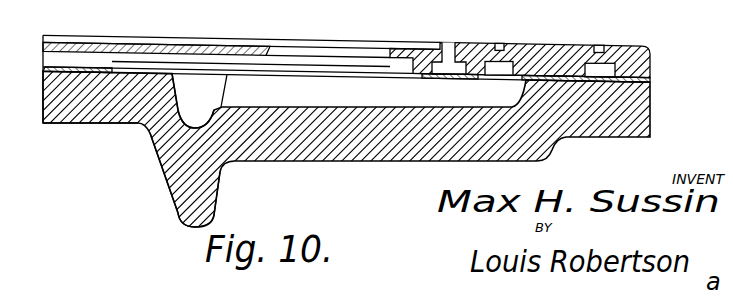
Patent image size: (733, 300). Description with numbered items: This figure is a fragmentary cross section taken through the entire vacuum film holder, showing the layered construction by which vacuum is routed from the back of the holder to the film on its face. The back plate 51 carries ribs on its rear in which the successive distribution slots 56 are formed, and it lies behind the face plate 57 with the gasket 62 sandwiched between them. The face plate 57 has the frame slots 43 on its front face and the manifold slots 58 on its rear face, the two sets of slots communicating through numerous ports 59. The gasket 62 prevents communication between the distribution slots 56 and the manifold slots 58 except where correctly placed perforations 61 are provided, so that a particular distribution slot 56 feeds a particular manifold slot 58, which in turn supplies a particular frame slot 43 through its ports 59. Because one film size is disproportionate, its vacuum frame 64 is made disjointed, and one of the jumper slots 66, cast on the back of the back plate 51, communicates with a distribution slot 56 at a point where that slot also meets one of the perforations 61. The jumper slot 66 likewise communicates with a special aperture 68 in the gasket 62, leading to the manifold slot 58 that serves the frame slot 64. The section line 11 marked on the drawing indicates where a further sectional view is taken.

The section line 11 is at (38, 63).
The frame slots 43 is at (603, 48).
The back plate 51 is at (650, 118).
The distribution slots 56 is at (188, 112).
The face plate 57 is at (552, 48).
The manifold slots 58 is at (140, 60).
The ports 59 is at (265, 52).
The perforations 61 is at (90, 123).
The gasket 62 is at (70, 63).
The vacuum frame 64 is at (357, 32).
The jumper slots 66 is at (308, 97).
The special aperture 68 is at (503, 82).